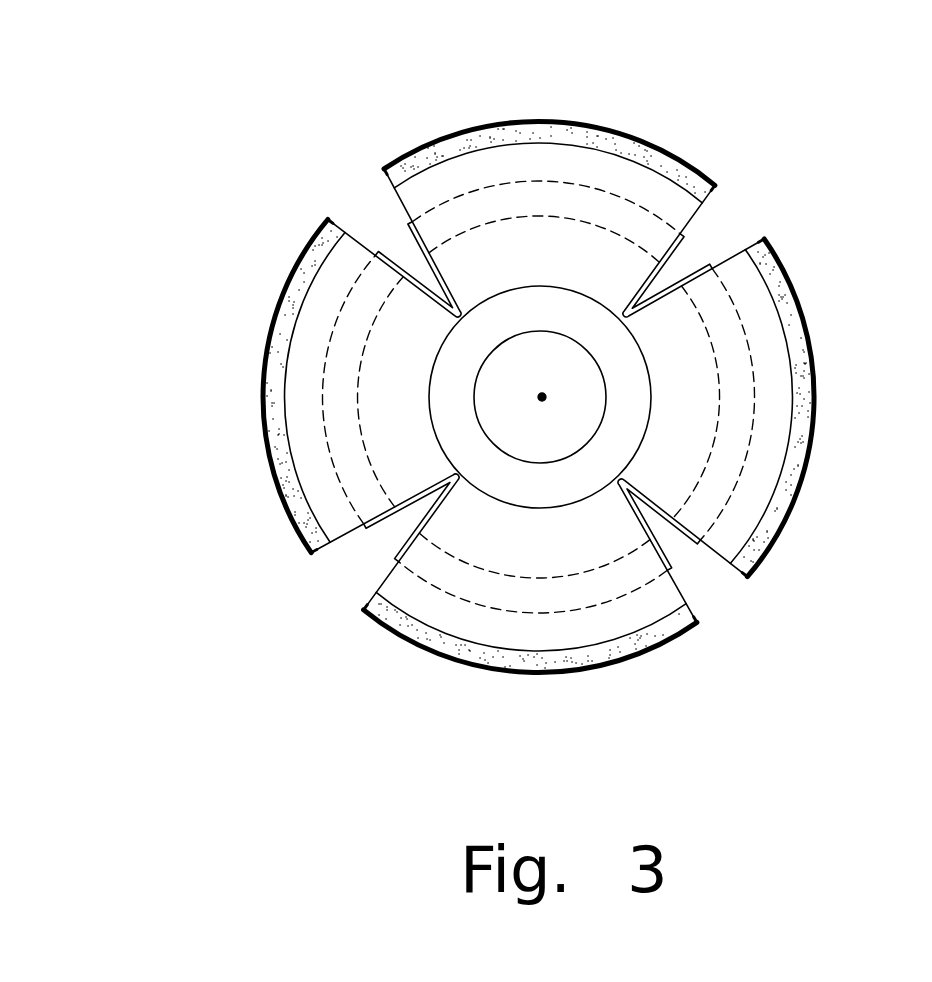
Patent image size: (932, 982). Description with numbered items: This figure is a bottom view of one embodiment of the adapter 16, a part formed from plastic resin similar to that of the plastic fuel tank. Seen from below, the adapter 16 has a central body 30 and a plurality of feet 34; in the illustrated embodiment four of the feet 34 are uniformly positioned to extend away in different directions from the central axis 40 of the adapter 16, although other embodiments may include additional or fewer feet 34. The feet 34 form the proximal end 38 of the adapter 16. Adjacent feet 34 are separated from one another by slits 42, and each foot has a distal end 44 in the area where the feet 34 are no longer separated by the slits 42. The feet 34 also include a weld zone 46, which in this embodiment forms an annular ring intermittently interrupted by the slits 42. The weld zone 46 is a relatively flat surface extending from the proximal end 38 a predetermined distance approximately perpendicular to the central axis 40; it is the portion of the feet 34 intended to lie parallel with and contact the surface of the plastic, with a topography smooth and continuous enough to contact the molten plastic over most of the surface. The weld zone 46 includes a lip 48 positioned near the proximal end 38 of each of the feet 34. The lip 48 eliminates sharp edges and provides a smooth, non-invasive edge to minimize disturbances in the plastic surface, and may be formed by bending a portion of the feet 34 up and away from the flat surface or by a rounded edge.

The adapter 16 is at (188, 138).
The body 30 is at (572, 482).
The feet 34 is at (536, 243).
The proximal end 38 is at (559, 114).
The central axis 40 is at (548, 397).
The slits 42 is at (373, 218).
The distal end 44 is at (560, 285).
The weld zone 46 is at (610, 140).
The lip 48 is at (447, 133).